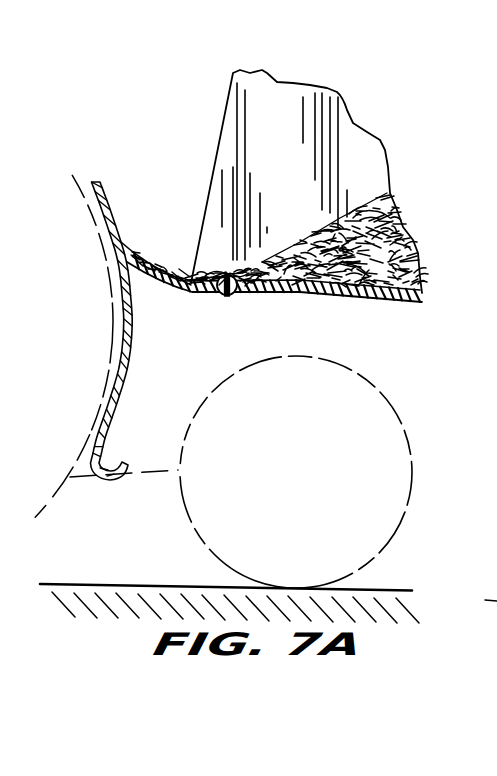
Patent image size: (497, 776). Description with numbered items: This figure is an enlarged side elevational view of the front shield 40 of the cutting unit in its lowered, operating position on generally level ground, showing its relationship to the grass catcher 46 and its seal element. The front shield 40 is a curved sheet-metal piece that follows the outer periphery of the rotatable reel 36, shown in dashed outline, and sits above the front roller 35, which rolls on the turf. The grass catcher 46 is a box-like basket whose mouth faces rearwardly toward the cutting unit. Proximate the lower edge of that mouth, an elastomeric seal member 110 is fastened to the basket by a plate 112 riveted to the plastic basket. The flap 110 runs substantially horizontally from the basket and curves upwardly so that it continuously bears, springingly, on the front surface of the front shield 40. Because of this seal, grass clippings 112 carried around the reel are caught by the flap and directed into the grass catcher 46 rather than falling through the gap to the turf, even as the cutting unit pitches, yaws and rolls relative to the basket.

The front roller 35 is at (197, 532).
The rotatable reel 36 is at (56, 362).
The front shield 40 is at (127, 373).
The grass catcher 46 is at (352, 140).
The seal member 110 is at (166, 283).
The plate 112 is at (172, 261).